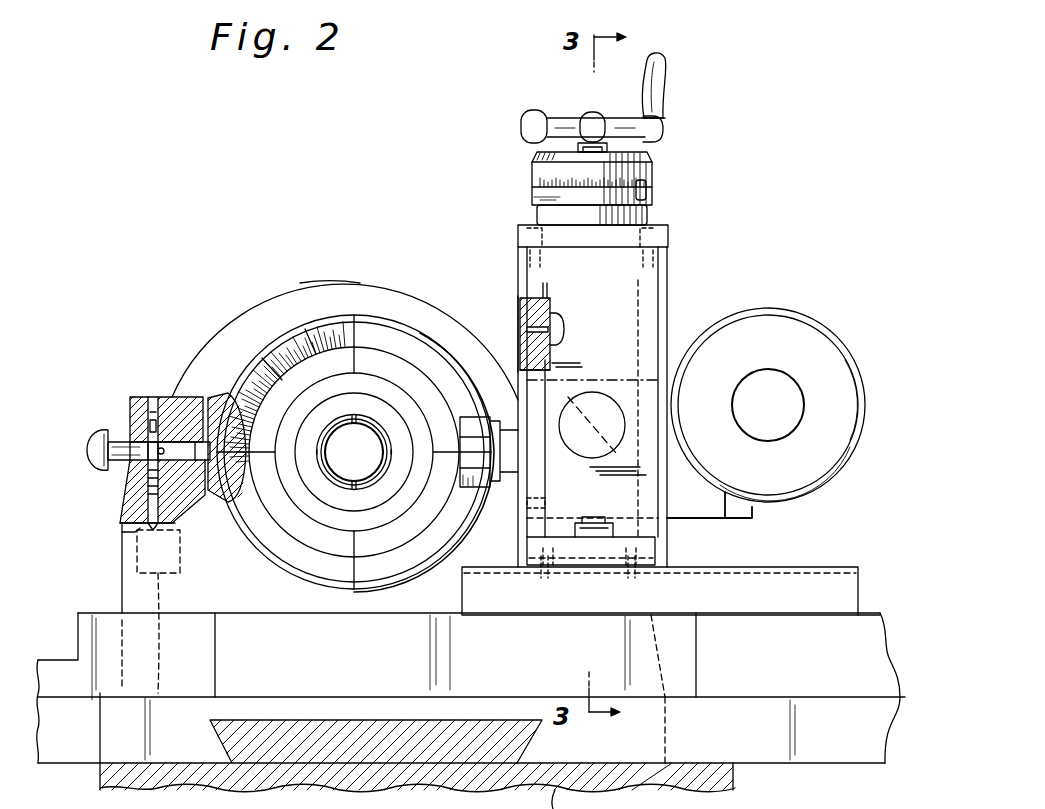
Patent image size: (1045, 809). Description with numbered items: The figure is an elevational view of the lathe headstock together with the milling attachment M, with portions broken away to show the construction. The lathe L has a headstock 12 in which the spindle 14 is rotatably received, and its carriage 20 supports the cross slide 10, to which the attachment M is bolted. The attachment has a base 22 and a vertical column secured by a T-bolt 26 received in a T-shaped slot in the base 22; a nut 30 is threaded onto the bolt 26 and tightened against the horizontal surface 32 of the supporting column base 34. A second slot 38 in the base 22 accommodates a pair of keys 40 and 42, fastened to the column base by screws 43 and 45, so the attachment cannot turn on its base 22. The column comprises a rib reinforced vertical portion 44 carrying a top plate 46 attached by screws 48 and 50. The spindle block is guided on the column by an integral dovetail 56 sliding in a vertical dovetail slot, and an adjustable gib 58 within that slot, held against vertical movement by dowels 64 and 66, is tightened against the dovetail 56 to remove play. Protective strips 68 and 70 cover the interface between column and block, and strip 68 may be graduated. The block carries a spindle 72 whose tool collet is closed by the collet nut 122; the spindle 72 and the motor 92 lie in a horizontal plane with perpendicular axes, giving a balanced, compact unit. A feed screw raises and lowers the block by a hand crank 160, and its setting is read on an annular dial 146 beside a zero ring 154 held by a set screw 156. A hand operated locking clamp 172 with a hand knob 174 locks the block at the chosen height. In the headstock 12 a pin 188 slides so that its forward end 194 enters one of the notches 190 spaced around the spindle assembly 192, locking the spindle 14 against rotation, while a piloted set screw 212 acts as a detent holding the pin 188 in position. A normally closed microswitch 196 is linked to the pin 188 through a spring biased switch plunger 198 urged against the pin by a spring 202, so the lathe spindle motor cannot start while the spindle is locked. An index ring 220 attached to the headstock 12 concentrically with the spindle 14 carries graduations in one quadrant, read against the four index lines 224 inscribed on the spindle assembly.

The cross slide 10 is at (688, 656).
The headstock 12 is at (262, 291).
The spindle 14 is at (370, 378).
The carriage 20 is at (658, 718).
The base 22 is at (824, 598).
The T-bolt 26 is at (581, 521).
The nut 30 is at (606, 517).
The horizontal surface 32 is at (637, 527).
The supporting column base 34 is at (535, 545).
The second slot 38 is at (742, 572).
The key 40 is at (538, 576).
The key 42 is at (652, 570).
The screw 43 is at (552, 578).
The rib reinforced vertical portion 44 is at (537, 345).
The screw 45 is at (627, 578).
The top plate 46 is at (660, 226).
The screw 48 is at (670, 241).
The screw 50 is at (520, 242).
The dovetail 56 is at (564, 329).
The adjustable gib 58 is at (548, 312).
The dowel 64 is at (530, 318).
The dowel 66 is at (599, 473).
The protective strip 68 is at (522, 331).
The protective strip 70 is at (668, 288).
The spindle 72 is at (512, 483).
The motor 92 is at (852, 406).
The collet nut 122 is at (484, 447).
The annular dial 146 is at (535, 170).
The zero ring 154 is at (538, 192).
The set screw 156 is at (652, 187).
The hand crank 160 is at (660, 64).
The hand operated locking clamp 172 is at (634, 410).
The hand knob 174 is at (584, 393).
The pin 188 is at (110, 418).
The notches 190 is at (204, 507).
The spindle assembly 192 is at (216, 398).
The forward end 194 is at (198, 436).
The microswitch 196 is at (124, 580).
The switch plunger 198 is at (152, 470).
The spring 202 is at (148, 500).
The piloted set screw 212 is at (152, 397).
The index ring 220 is at (383, 580).
The index lines 224 is at (356, 322).
The lathe L is at (309, 270).
The milling attachment M is at (688, 110).